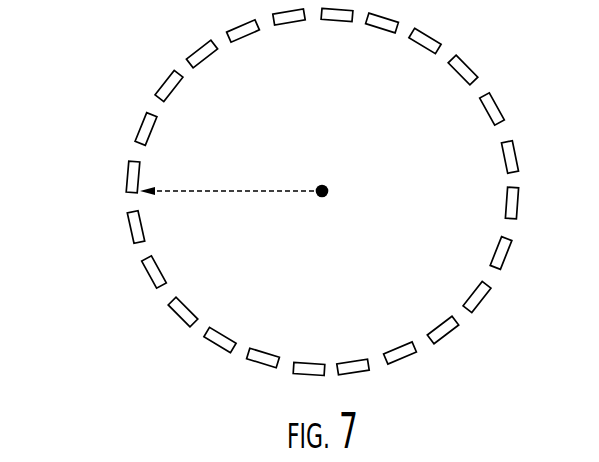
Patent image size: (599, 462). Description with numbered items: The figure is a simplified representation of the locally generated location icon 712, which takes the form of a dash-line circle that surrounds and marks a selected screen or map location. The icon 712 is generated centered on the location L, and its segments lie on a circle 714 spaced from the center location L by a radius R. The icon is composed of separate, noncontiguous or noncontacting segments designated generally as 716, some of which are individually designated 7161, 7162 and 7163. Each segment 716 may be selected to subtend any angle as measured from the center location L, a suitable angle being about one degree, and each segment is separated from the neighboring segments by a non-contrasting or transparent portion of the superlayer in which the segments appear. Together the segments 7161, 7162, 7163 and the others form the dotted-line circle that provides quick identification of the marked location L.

The icon 712 is at (176, 392).
The circle 714 is at (481, 299).
The segments 716 is at (301, 117).
The first segment 7161 is at (127, 227).
The second segment 7162 is at (126, 173).
The third segment 7163 is at (135, 126).
The radius R is at (253, 191).
The center location L is at (326, 184).